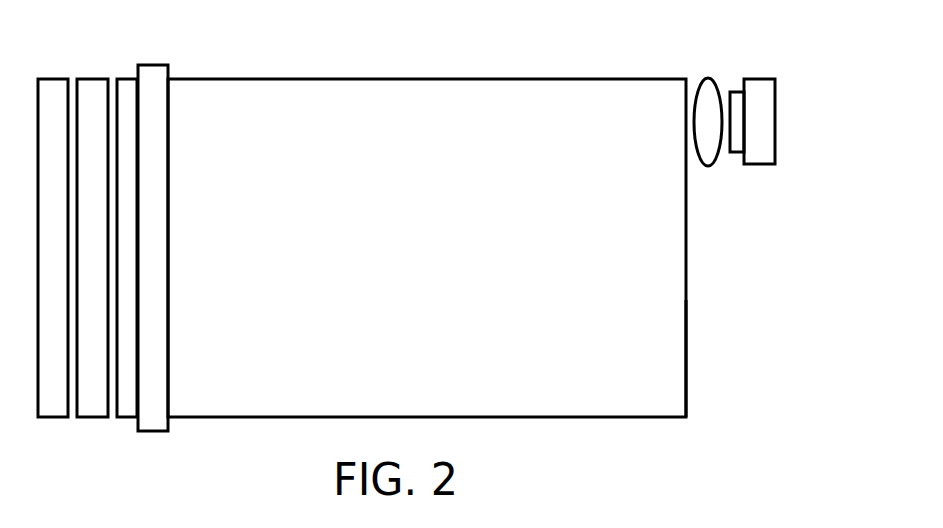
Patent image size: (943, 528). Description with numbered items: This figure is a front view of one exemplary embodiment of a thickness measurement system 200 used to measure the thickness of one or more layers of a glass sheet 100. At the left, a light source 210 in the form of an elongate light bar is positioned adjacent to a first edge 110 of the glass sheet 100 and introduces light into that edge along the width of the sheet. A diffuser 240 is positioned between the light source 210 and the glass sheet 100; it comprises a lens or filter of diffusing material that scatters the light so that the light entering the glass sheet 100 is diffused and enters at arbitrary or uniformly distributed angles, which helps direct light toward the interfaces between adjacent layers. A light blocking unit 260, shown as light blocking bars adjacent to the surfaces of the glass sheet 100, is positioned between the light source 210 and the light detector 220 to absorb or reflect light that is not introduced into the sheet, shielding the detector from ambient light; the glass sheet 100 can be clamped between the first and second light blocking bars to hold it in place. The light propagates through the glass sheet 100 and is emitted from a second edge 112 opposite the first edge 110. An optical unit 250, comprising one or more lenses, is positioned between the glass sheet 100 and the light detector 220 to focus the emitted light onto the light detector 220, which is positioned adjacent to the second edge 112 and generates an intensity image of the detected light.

The glass sheet 100 is at (427, 230).
The first edge 110 is at (79, 266).
The second edge 112 is at (726, 358).
The thickness measurement system 200 is at (752, 24).
The light source 210 is at (88, 224).
The light detector 220 is at (714, 103).
The diffuser 240 is at (150, 223).
The optical unit 250 is at (628, 104).
The light blocking unit 260 is at (216, 235).